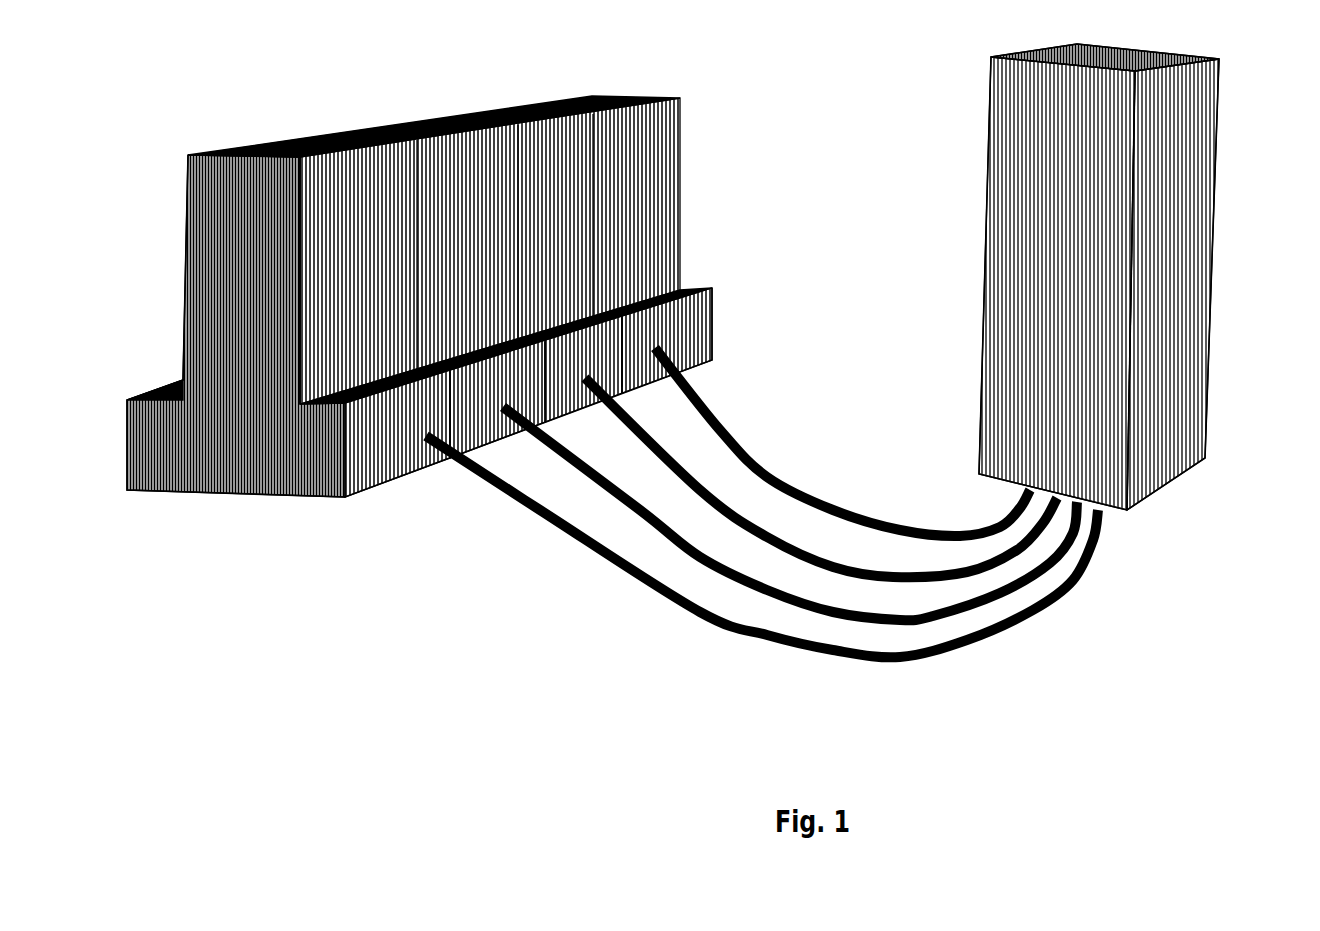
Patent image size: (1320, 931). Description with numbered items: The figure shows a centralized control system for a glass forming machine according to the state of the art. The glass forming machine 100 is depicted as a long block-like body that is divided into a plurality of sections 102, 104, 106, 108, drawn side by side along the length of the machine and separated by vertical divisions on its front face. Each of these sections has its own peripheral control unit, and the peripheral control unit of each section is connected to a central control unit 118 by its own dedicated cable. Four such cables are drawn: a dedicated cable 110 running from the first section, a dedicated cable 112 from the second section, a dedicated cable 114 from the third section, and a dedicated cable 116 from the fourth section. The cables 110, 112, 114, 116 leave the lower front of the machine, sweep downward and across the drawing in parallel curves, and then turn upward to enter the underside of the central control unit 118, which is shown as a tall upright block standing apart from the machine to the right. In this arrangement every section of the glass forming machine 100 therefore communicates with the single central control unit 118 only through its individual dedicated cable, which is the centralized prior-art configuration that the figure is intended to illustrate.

The glass forming machine 100 is at (224, 108).
The section 102 is at (370, 467).
The section 104 is at (483, 428).
The section 106 is at (555, 400).
The section 108 is at (625, 373).
The dedicated cable 110 is at (927, 650).
The dedicated cable 112 is at (936, 610).
The dedicated cable 114 is at (897, 577).
The dedicated cable 116 is at (850, 515).
The central control unit 118 is at (1180, 283).